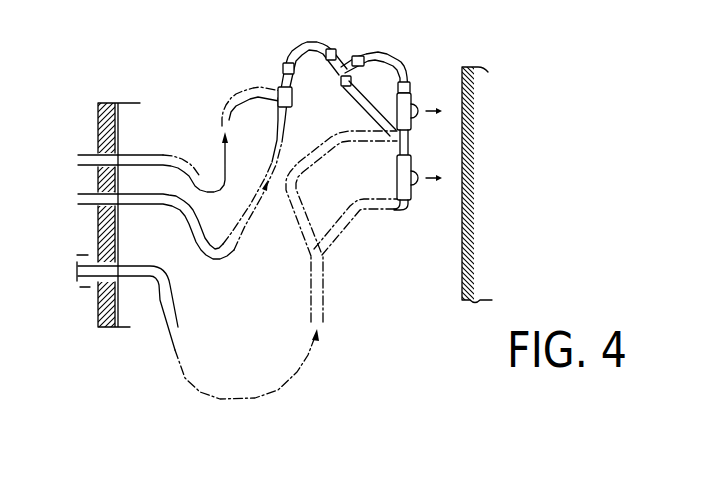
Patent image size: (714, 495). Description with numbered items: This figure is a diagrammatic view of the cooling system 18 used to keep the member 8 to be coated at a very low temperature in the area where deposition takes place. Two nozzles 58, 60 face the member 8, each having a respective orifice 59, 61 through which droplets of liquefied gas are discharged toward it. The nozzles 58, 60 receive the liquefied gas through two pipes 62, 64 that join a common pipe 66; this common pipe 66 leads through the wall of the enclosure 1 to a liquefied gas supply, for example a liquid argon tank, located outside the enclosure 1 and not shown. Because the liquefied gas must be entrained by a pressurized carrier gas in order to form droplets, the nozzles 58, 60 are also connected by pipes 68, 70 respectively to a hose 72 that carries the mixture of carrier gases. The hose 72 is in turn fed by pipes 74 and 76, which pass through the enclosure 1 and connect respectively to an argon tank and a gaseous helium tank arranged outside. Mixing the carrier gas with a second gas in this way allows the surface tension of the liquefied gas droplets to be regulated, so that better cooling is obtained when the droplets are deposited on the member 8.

The enclosure 1 is at (99, 131).
The member 8 is at (513, 186).
The cooling system 18 is at (446, 320).
The nozzle 58 is at (414, 93).
The orifice 59 is at (418, 114).
The nozzle 60 is at (417, 204).
The orifice 61 is at (418, 178).
The pipe 62 is at (288, 213).
The pipe 64 is at (363, 213).
The common pipe 66 is at (313, 320).
The pipe 68 is at (373, 68).
The pipe 70 is at (362, 110).
The hose 72 is at (292, 50).
The pipe 74 is at (144, 154).
The pipe 76 is at (150, 204).